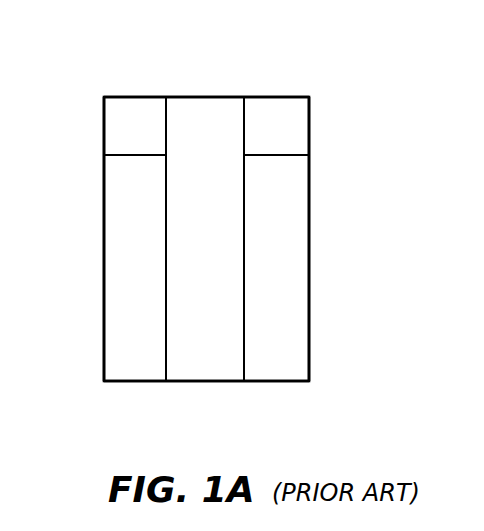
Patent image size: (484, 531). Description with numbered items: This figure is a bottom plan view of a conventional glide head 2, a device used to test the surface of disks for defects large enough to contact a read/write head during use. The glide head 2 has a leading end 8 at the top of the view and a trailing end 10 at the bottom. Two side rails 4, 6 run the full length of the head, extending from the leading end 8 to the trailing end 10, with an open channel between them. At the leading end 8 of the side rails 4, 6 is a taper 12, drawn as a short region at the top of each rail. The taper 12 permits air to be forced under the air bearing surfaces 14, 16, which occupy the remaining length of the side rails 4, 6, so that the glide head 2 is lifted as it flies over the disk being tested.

The glide head 2 is at (287, 75).
The side rail 4 is at (103, 205).
The side rail 6 is at (310, 258).
The leading end 8 is at (196, 96).
The trailing end 10 is at (207, 382).
The taper 12 is at (113, 122).
The air bearing surface 14 is at (116, 260).
The air bearing surface 16 is at (258, 243).